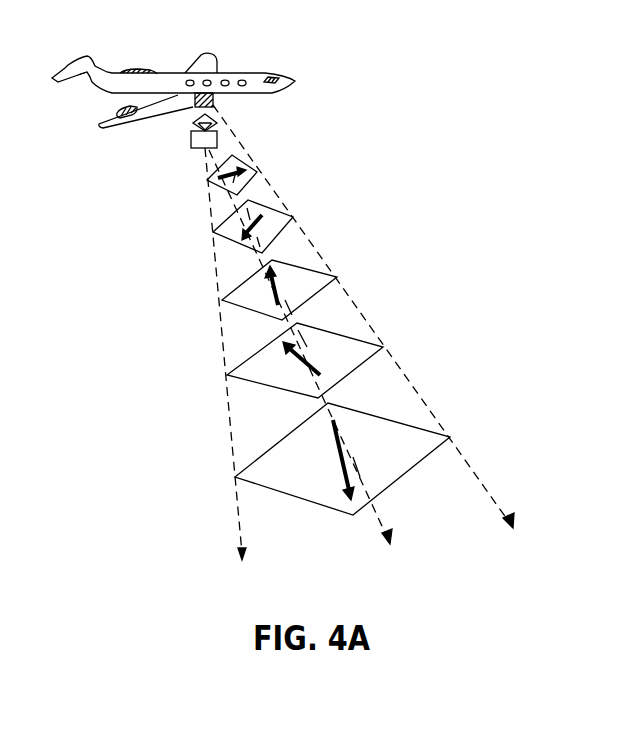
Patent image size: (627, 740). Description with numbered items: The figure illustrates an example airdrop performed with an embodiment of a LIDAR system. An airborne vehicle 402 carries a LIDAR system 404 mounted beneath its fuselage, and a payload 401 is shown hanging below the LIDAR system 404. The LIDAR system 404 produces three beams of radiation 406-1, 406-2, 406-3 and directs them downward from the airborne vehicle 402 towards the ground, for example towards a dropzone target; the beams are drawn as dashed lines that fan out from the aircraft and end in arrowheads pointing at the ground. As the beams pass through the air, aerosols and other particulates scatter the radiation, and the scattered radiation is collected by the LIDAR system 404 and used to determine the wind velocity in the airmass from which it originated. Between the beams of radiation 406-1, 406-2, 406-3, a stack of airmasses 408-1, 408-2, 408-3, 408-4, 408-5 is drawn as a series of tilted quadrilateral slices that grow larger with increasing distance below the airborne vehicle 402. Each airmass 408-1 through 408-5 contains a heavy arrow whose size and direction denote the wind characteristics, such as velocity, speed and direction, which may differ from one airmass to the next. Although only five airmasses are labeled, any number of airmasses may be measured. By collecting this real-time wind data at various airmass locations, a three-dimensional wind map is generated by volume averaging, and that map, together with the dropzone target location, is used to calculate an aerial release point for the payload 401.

The payload 401 is at (191, 145).
The airborne vehicle 402 is at (296, 80).
The LIDAR system 404 is at (214, 101).
The beam of radiation 406-1 is at (237, 490).
The beam of radiation 406-2 is at (380, 525).
The beam of radiation 406-3 is at (482, 483).
The airmass 408-1 is at (258, 172).
The airmass 408-2 is at (294, 217).
The airmass 408-3 is at (338, 277).
The airmass 408-4 is at (385, 347).
The airmass 408-5 is at (451, 437).